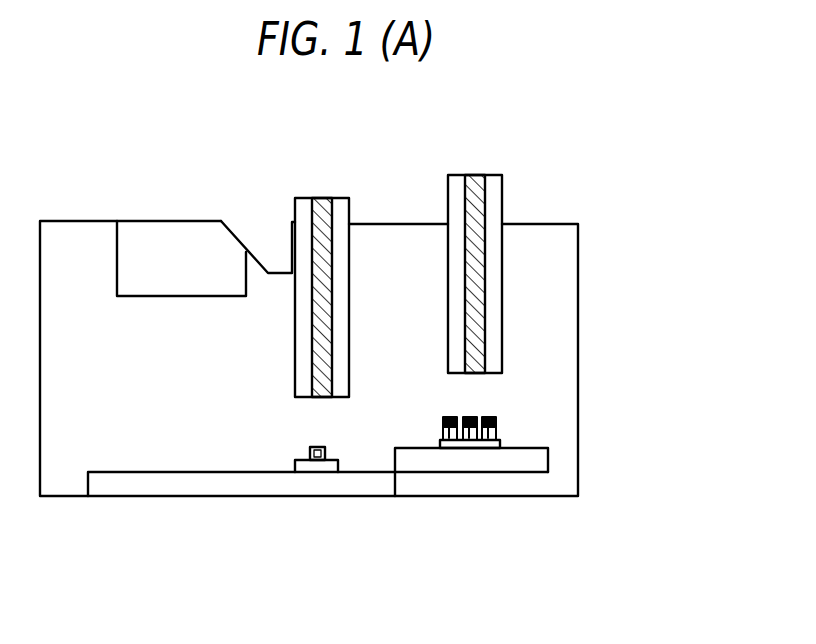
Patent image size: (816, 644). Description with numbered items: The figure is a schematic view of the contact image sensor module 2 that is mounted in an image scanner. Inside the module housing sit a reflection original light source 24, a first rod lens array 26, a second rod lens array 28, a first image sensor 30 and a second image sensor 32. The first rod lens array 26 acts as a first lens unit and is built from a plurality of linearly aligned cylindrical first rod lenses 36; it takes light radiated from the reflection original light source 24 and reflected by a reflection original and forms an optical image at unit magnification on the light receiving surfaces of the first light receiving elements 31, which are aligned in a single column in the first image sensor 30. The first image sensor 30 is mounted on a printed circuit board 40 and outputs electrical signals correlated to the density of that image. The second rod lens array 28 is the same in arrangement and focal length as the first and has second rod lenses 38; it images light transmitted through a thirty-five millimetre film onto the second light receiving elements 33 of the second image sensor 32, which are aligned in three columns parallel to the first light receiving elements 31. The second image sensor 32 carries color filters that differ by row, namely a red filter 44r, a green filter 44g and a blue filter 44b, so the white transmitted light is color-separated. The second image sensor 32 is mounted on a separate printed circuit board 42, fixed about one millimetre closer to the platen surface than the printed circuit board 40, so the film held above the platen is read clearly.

The contact image sensor module 2 is at (605, 190).
The reflection original light source 24 is at (165, 238).
The first rod lens array 26 is at (336, 263).
The second rod lens array 28 is at (485, 243).
The first image sensor 30 is at (294, 511).
The first light receiving elements 31 is at (331, 462).
The second image sensor 32 is at (430, 430).
The second light receiving elements 33 is at (534, 468).
The first rod lenses 36 is at (320, 200).
The second rod lenses 38 is at (472, 177).
The printed circuit board 40 is at (125, 483).
The printed circuit board 42 is at (527, 463).
The red filter 44r is at (452, 416).
The green filter 44g is at (471, 416).
The blue filter 44b is at (491, 418).